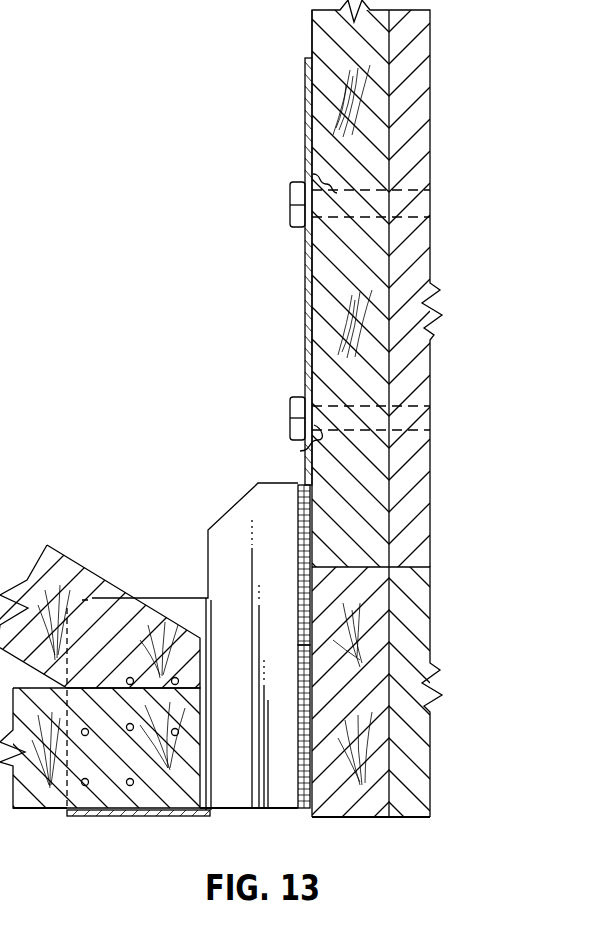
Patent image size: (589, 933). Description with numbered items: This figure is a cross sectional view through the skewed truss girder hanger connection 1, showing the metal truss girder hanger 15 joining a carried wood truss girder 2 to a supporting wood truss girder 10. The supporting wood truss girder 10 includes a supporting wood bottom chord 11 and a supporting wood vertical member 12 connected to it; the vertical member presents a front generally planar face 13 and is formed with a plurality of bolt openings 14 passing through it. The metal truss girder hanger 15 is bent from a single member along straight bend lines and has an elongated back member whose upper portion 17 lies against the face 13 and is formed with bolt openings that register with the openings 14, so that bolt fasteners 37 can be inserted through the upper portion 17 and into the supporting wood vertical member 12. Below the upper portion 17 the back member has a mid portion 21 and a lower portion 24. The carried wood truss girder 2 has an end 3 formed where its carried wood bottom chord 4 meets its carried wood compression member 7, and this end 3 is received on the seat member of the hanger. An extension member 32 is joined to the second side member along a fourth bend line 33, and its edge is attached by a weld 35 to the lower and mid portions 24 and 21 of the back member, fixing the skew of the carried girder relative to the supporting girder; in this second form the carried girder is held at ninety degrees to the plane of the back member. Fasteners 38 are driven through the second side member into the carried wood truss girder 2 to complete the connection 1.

The truss girder hanger connection 1 is at (236, 312).
The carried wood truss girder 2 is at (17, 818).
The end 3 is at (118, 824).
The carried wood bottom chord 4 is at (48, 810).
The carried wood compression member 7 is at (70, 558).
The supporting wood truss girder 10 is at (434, 560).
The supporting wood bottom chord 11 is at (412, 826).
The supporting wood vertical member 12 is at (433, 383).
The front generally planar face 13 is at (312, 21).
The bolt openings 14 is at (312, 174).
The metal truss girder hanger 15 is at (296, 59).
The upper portion 17 is at (302, 92).
The mid portion 21 is at (298, 508).
The lower portion 24 is at (298, 760).
The extension member 32 is at (289, 551).
The fourth bend line 33 is at (210, 613).
The weld 35 is at (298, 622).
The bolt fasteners 37 is at (312, 237).
The fasteners 38 is at (176, 678).